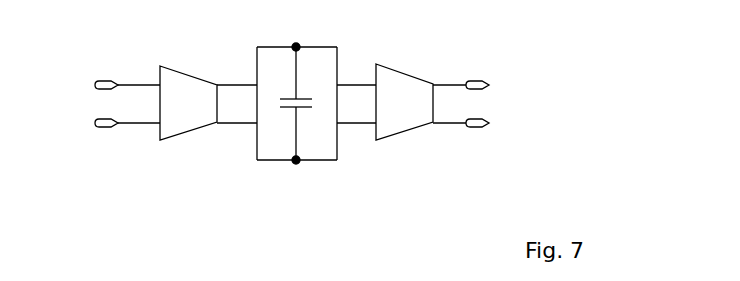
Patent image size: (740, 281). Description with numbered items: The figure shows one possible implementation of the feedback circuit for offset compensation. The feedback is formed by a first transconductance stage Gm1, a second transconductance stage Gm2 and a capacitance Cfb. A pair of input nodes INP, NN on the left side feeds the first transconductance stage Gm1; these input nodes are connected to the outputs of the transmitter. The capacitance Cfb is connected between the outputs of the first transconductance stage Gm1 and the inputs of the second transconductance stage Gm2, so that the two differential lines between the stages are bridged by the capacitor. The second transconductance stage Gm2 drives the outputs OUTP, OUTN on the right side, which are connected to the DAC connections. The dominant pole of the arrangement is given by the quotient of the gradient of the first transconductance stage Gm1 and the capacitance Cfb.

The input node INP is at (108, 86).
The negative input terminal NN is at (108, 124).
The first transconductance stage Gm1 is at (188, 103).
The capacitance Cfb is at (313, 103).
The second transconductance stage Gm2 is at (404, 102).
The output OUTP is at (485, 82).
The output OUTN is at (486, 120).